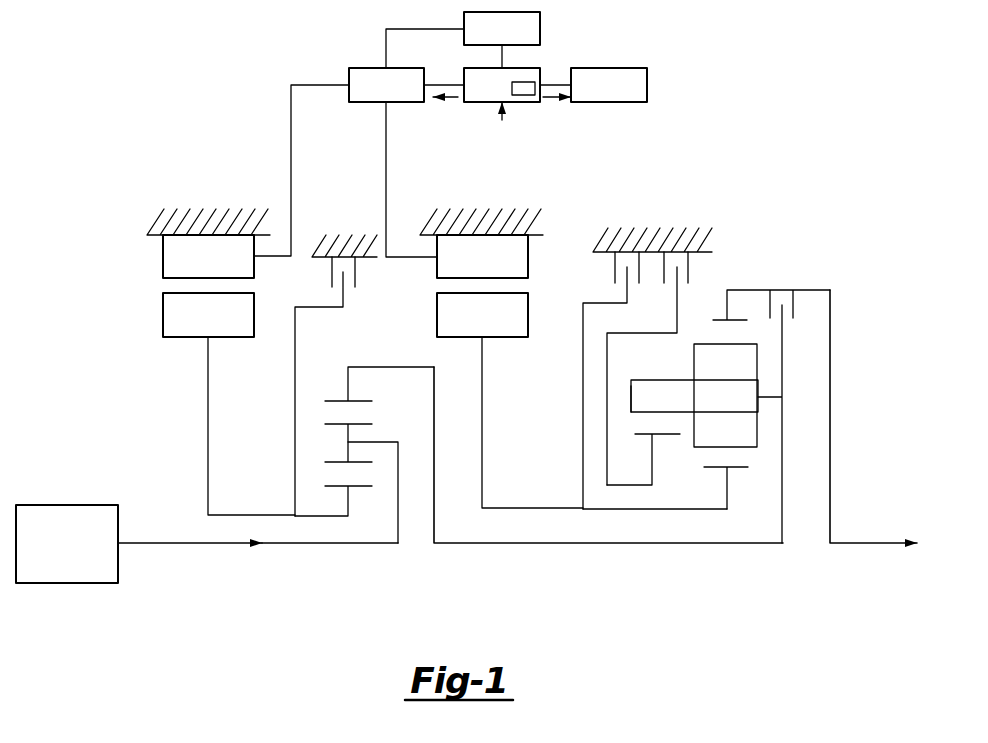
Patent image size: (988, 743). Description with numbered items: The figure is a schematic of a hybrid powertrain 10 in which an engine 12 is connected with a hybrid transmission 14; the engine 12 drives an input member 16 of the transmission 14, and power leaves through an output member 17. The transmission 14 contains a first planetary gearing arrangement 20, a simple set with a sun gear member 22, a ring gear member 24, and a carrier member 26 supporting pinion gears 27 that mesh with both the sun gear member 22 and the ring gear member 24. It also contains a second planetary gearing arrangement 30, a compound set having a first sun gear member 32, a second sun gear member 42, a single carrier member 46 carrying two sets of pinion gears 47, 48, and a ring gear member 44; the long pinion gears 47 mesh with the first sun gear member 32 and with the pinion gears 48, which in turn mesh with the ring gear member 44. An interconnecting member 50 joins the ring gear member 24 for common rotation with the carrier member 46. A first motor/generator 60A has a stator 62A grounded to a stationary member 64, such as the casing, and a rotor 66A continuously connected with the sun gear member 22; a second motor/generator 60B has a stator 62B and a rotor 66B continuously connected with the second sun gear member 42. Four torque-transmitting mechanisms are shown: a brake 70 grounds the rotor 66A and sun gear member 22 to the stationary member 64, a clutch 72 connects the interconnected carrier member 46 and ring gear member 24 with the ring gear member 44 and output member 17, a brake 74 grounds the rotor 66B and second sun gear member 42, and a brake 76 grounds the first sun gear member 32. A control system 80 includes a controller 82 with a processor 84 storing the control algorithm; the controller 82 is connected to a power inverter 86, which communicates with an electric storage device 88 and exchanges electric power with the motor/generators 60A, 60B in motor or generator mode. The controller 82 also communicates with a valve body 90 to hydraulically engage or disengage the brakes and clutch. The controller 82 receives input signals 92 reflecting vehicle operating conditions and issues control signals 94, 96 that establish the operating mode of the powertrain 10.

The hybrid powertrain 10 is at (752, 65).
The engine 12 is at (56, 576).
The hybrid transmission 14 is at (715, 210).
The input member 16 is at (180, 543).
The output member 17 is at (860, 543).
The first planetary gearing arrangement 20 is at (364, 483).
The sun gear member 22 is at (345, 487).
The ring gear member 24 is at (340, 398).
The carrier member 26 is at (387, 440).
The pinion gears 27 is at (345, 448).
The second planetary gearing arrangement 30 is at (681, 511).
The first sun gear member 32 is at (665, 437).
The second sun gear member 42 is at (733, 470).
The ring gear member 44 is at (713, 318).
The carrier member 46 is at (780, 397).
The pinion gears 47 is at (631, 405).
The pinion gears 48 is at (694, 362).
The interconnecting member 50 is at (537, 543).
The first motor/generator 60A is at (186, 369).
The second motor/generator 60B is at (514, 354).
The stator 62A is at (193, 268).
The stator 62B is at (467, 268).
The stationary member 64 is at (198, 215).
The rotor 66A is at (193, 326).
The rotor 66B is at (467, 326).
The brake 70 is at (353, 298).
The clutch 72 is at (793, 327).
The brake 74 is at (612, 292).
The brake 76 is at (683, 293).
The control system 80 is at (632, 52).
The controller 82 is at (477, 97).
The processor 84 is at (523, 82).
The power inverter 86 is at (374, 97).
The electric storage device 88 is at (490, 41).
The valve body 90 is at (597, 97).
The input signals 92 is at (502, 120).
The control signal 94 is at (447, 97).
The control signal 96 is at (550, 97).